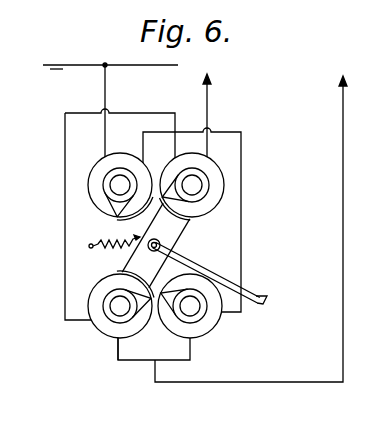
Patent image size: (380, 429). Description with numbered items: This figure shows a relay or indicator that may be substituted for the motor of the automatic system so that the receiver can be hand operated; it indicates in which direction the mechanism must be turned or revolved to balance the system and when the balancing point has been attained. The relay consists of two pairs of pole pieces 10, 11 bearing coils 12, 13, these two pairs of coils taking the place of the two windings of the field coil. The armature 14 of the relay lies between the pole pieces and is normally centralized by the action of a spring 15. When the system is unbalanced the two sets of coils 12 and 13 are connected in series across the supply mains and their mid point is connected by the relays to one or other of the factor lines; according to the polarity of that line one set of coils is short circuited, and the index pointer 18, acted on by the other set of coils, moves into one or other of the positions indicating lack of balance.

The pole pieces 10 is at (224, 191).
The pole pieces 11 is at (101, 178).
The coils 12 is at (213, 167).
The coils 13 is at (127, 148).
The armature 14 is at (186, 232).
The spring 15 is at (113, 239).
The index pointer 18 is at (225, 278).